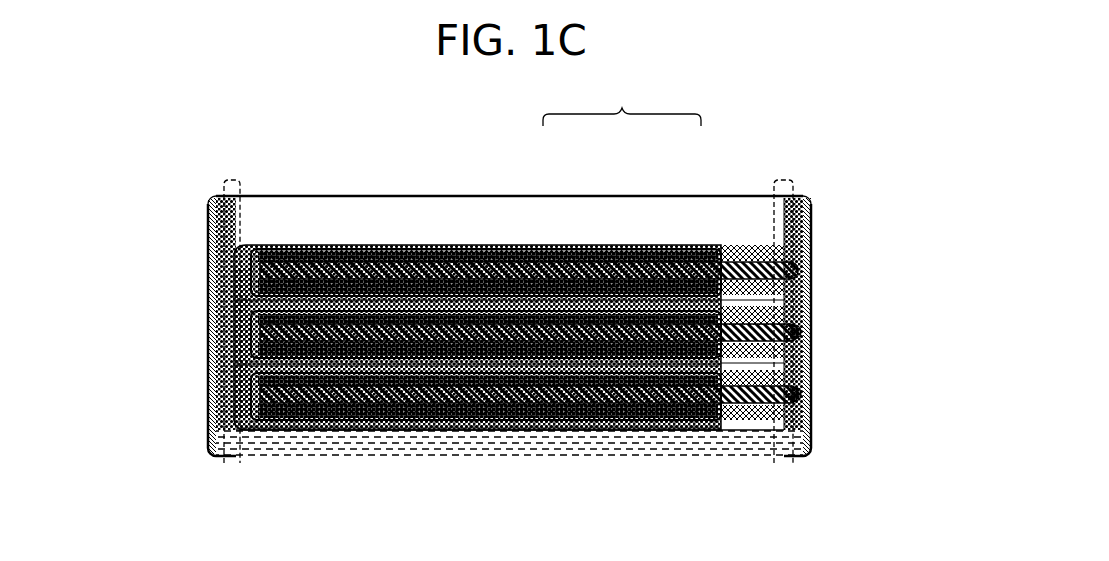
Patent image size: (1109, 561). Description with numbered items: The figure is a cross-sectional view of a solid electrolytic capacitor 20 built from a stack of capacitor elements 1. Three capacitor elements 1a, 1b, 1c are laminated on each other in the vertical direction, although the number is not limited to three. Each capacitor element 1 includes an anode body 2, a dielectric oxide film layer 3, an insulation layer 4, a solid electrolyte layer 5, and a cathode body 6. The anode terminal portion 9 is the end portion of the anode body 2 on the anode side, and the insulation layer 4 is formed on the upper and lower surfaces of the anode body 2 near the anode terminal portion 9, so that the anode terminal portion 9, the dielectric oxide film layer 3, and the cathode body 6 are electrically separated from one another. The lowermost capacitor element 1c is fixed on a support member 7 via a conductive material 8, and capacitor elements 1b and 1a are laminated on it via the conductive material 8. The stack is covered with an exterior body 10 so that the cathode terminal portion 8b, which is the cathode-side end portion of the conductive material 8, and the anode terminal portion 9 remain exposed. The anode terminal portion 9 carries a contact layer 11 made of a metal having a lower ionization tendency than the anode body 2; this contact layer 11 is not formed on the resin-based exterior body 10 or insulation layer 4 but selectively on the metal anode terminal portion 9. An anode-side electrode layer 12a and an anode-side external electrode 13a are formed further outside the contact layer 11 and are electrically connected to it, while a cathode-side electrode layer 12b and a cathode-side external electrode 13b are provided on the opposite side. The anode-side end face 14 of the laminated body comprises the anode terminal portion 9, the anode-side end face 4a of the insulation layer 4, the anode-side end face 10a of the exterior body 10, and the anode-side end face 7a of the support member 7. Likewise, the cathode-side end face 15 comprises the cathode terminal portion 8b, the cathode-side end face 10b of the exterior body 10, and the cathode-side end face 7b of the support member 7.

The capacitor element 1 is at (622, 102).
The capacitor element 1a is at (524, 209).
The capacitor element 1b is at (318, 325).
The capacitor element 1c is at (345, 400).
The anode body 2 is at (667, 262).
The dielectric oxide film layer 3 is at (628, 247).
The insulation layer 4 is at (723, 240).
The anode-side end face of insulation layer 4a is at (793, 297).
The solid electrolyte layer 5 is at (598, 240).
The cathode body 6 is at (564, 238).
The support member 7 is at (658, 433).
The anode-side end face of support member 7a is at (783, 437).
The cathode-side end face of support member 7b is at (228, 451).
The conductive material 8 is at (238, 245).
The cathode terminal portion 8b is at (224, 292).
The anode terminal portion 9 is at (783, 383).
The exterior body 10 is at (422, 212).
The anode-side end face of exterior body 10a is at (784, 218).
The cathode-side end face of exterior body 10b is at (206, 248).
The contact layer 11 is at (789, 326).
The anode-side electrode layer 12a is at (785, 200).
The cathode-side electrode layer 12b is at (207, 206).
The anode-side external electrode 13a is at (803, 257).
The cathode-side external electrode 13b is at (204, 413).
The anode-side end face 14 is at (777, 168).
The cathode-side end face 15 is at (225, 168).
The solid electrolytic capacitor 20 is at (494, 527).